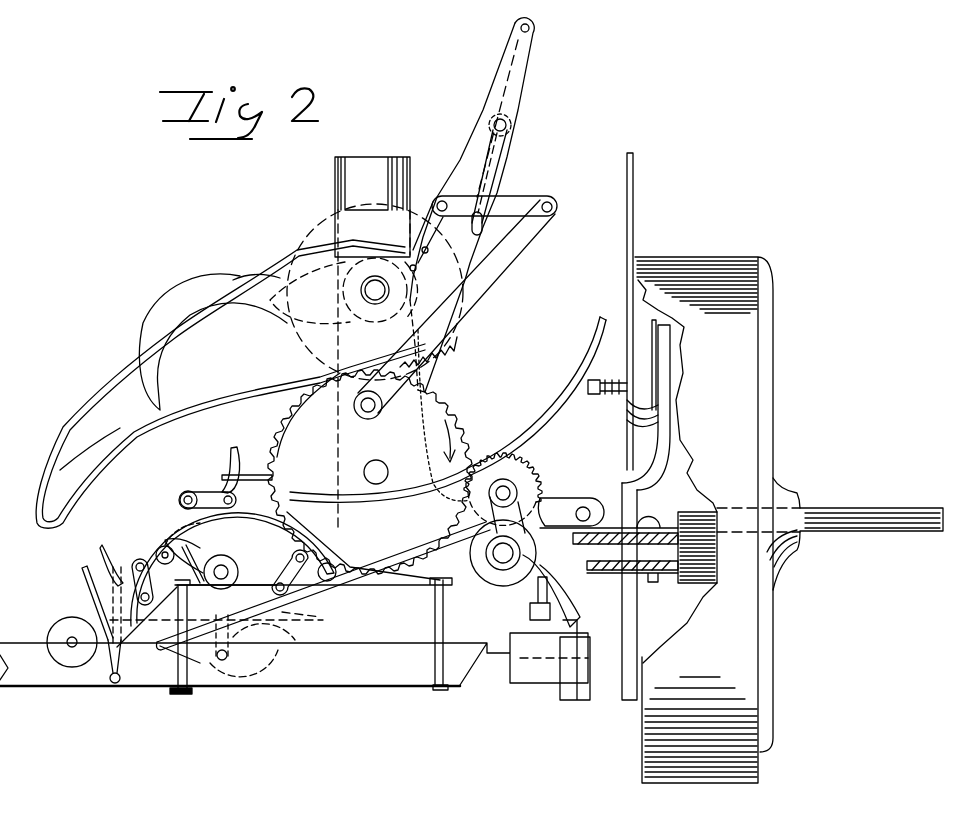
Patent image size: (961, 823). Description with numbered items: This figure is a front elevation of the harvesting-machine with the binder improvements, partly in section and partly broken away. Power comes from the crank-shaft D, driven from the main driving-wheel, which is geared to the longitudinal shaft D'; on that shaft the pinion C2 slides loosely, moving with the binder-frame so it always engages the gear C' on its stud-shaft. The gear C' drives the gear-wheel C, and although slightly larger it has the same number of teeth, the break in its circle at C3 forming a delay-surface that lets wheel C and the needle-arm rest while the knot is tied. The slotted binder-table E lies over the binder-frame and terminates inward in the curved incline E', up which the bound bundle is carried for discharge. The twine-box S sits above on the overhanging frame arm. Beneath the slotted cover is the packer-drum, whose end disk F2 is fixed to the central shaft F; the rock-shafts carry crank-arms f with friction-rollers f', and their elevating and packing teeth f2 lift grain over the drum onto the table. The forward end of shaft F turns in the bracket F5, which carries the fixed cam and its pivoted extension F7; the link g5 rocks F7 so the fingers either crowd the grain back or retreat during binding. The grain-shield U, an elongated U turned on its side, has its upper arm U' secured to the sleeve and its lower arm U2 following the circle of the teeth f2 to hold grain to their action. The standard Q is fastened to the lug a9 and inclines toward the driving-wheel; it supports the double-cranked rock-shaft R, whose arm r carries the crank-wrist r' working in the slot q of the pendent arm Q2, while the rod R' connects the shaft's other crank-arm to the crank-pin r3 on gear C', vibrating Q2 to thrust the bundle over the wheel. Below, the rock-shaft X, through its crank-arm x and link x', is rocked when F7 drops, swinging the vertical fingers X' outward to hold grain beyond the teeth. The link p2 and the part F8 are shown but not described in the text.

The crank-shaft D is at (705, 552).
The grain-shield U is at (230, 384).
The upper arm of grain-shield U' is at (186, 342).
The lower arm of grain-shield U2 is at (90, 449).
The twine-box S is at (372, 342).
The gear-wheel C is at (370, 352).
The lug a9 is at (427, 270).
The gear C' is at (370, 472).
The break in the circle C3 is at (302, 415).
The binder-table E is at (359, 475).
The inclined extension E' is at (448, 409).
The crank-pin r3 is at (375, 412).
The rod R' is at (456, 306).
The connecting link p2 is at (494, 206).
The pendent bar or arm Q2 is at (500, 185).
The double-cranked rock-shaft R is at (428, 213).
The standard Q is at (467, 205).
The crank-wrist r' is at (521, 122).
The crank-arm r is at (515, 131).
The longitudinal slot q is at (490, 165).
The pinion C2 is at (511, 485).
The longitudinal shaft D' is at (502, 508).
The end disk F2 is at (188, 481).
The central shaft F is at (250, 562).
The crank-arm f is at (208, 507).
The friction-roller f' is at (182, 504).
The elevating and packing teeth f2 is at (177, 515).
The pivoted extension-piece F7 is at (182, 532).
The bracket or standard F5 is at (218, 565).
The pivoted link g5 is at (182, 555).
The link F8 is at (220, 577).
The link x' is at (318, 593).
The crank-arm x is at (276, 585).
The vertical fingers X' is at (82, 606).
The rock-shaft X is at (61, 666).